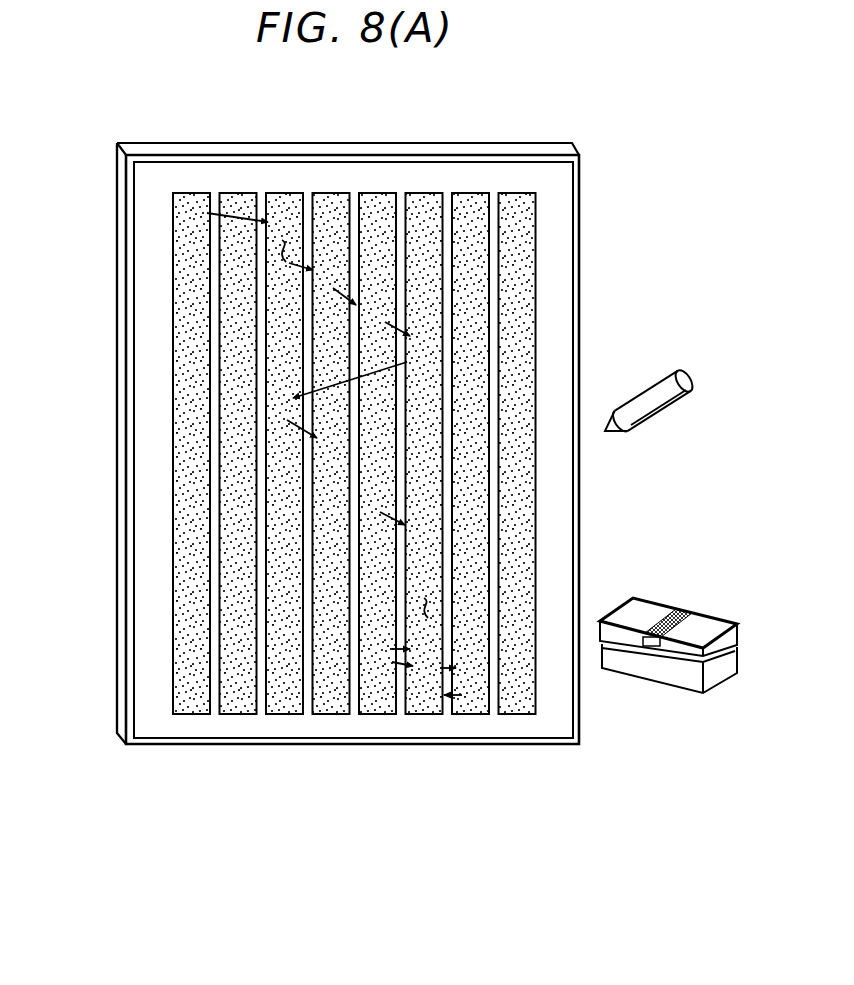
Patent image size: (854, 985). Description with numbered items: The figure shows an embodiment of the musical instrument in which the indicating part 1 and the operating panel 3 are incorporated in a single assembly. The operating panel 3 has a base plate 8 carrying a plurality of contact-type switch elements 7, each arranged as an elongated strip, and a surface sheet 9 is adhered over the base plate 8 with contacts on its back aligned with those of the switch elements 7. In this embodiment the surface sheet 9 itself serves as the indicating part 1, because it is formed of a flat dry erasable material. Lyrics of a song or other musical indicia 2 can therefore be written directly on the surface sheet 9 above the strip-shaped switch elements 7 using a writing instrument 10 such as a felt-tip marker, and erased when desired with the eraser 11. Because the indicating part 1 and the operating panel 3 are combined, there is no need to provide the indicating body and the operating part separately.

The indicating part 1 is at (553, 185).
The surface sheet 9 is at (353, 417).
The musical indicia 2 is at (422, 338).
The operating panel 3 is at (215, 153).
The switch element 7 is at (172, 434).
The base plate 8 is at (117, 352).
The writing instrument 10 is at (647, 395).
The eraser 11 is at (707, 630).